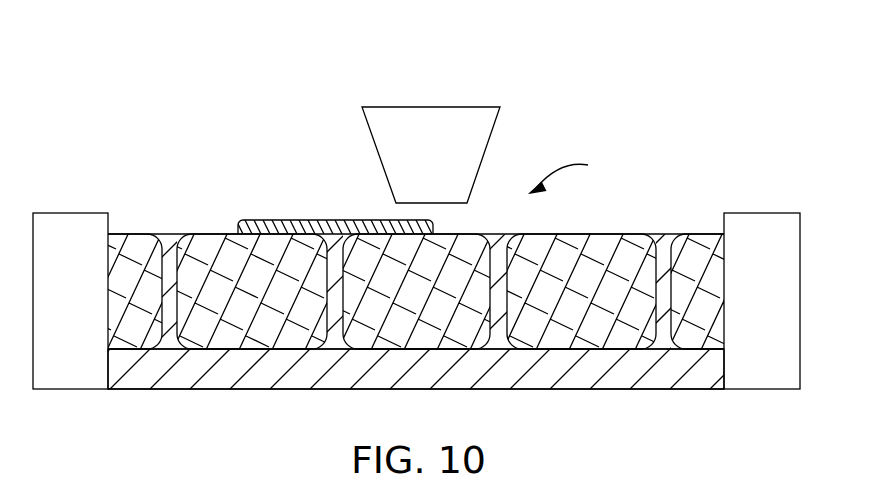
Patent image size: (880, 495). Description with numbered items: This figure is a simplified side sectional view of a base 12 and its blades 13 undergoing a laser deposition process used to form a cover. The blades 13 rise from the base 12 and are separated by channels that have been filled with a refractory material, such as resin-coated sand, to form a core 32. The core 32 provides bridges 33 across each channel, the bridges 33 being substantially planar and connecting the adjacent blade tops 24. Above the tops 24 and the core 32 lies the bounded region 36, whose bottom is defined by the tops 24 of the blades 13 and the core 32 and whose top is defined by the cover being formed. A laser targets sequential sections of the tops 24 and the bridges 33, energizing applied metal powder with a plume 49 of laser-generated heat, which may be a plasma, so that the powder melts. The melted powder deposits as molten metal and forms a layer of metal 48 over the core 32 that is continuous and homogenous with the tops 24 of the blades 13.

The base 12 is at (663, 380).
The blades 13 is at (663, 262).
The blade tops 24 is at (163, 233).
The core 32 is at (257, 320).
The bridges 33 is at (706, 234).
The bounded region 36 is at (581, 172).
The layer of metal 48 is at (265, 219).
The plume 49 is at (429, 107).